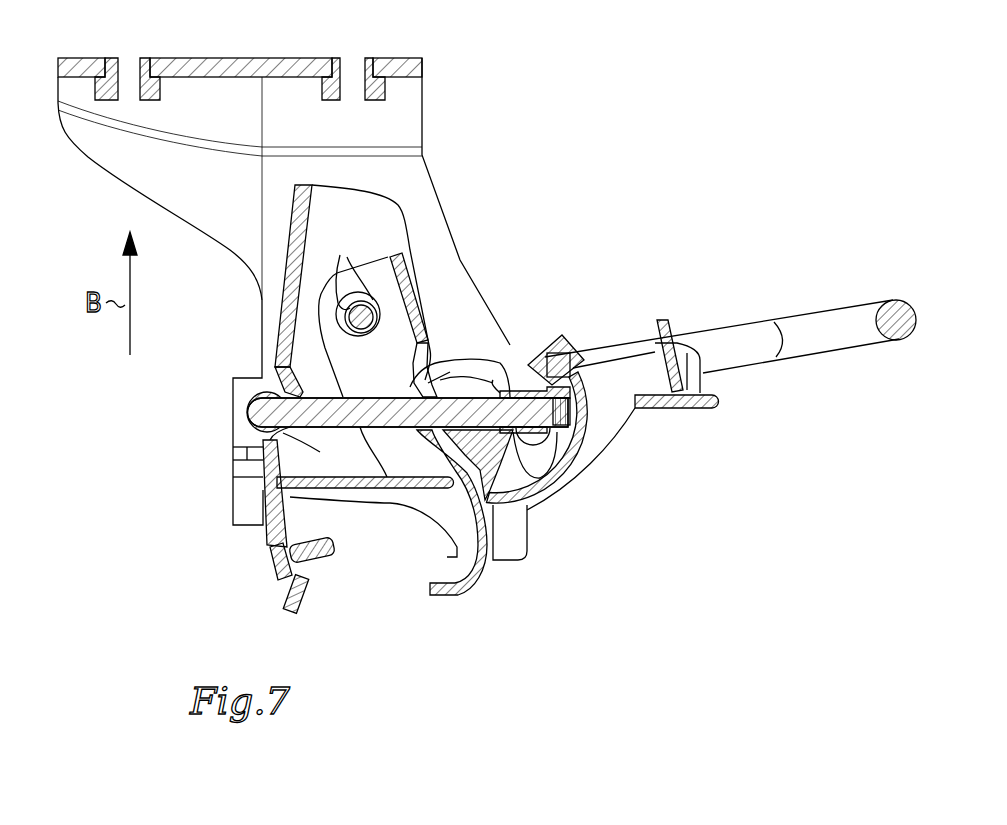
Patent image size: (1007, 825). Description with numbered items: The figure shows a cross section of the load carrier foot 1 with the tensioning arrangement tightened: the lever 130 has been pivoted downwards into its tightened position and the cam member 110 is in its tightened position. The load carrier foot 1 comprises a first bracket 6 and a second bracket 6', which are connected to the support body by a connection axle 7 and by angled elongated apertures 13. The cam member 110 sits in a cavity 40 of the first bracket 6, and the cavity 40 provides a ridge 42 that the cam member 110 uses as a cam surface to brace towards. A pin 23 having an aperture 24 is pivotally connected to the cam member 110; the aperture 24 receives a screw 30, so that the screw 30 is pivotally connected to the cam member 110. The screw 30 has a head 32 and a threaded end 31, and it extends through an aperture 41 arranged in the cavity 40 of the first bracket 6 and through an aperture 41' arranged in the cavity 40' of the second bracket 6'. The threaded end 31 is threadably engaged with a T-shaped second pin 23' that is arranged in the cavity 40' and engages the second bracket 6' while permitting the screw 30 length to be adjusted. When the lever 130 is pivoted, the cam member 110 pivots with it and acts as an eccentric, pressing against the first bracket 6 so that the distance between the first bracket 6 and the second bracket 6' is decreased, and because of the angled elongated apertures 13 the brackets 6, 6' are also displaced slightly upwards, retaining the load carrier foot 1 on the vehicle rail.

The load carrier foot 1 is at (516, 74).
The first bracket 6 is at (475, 527).
The second bracket 6' is at (258, 586).
The connection axle 7 is at (362, 328).
The elongated apertures 13 is at (353, 278).
The pin 23 is at (521, 450).
The second pin 23' is at (230, 456).
The aperture 24 is at (553, 422).
The screw 30 is at (388, 425).
The threaded end 31 is at (267, 413).
The head 32 is at (580, 372).
The cavity 40 is at (460, 349).
The cavity 40' is at (306, 493).
The aperture 41 is at (406, 370).
The aperture 41' is at (312, 533).
The ridge 42 is at (440, 370).
The cam member 110 is at (532, 353).
The lever 130 is at (798, 327).